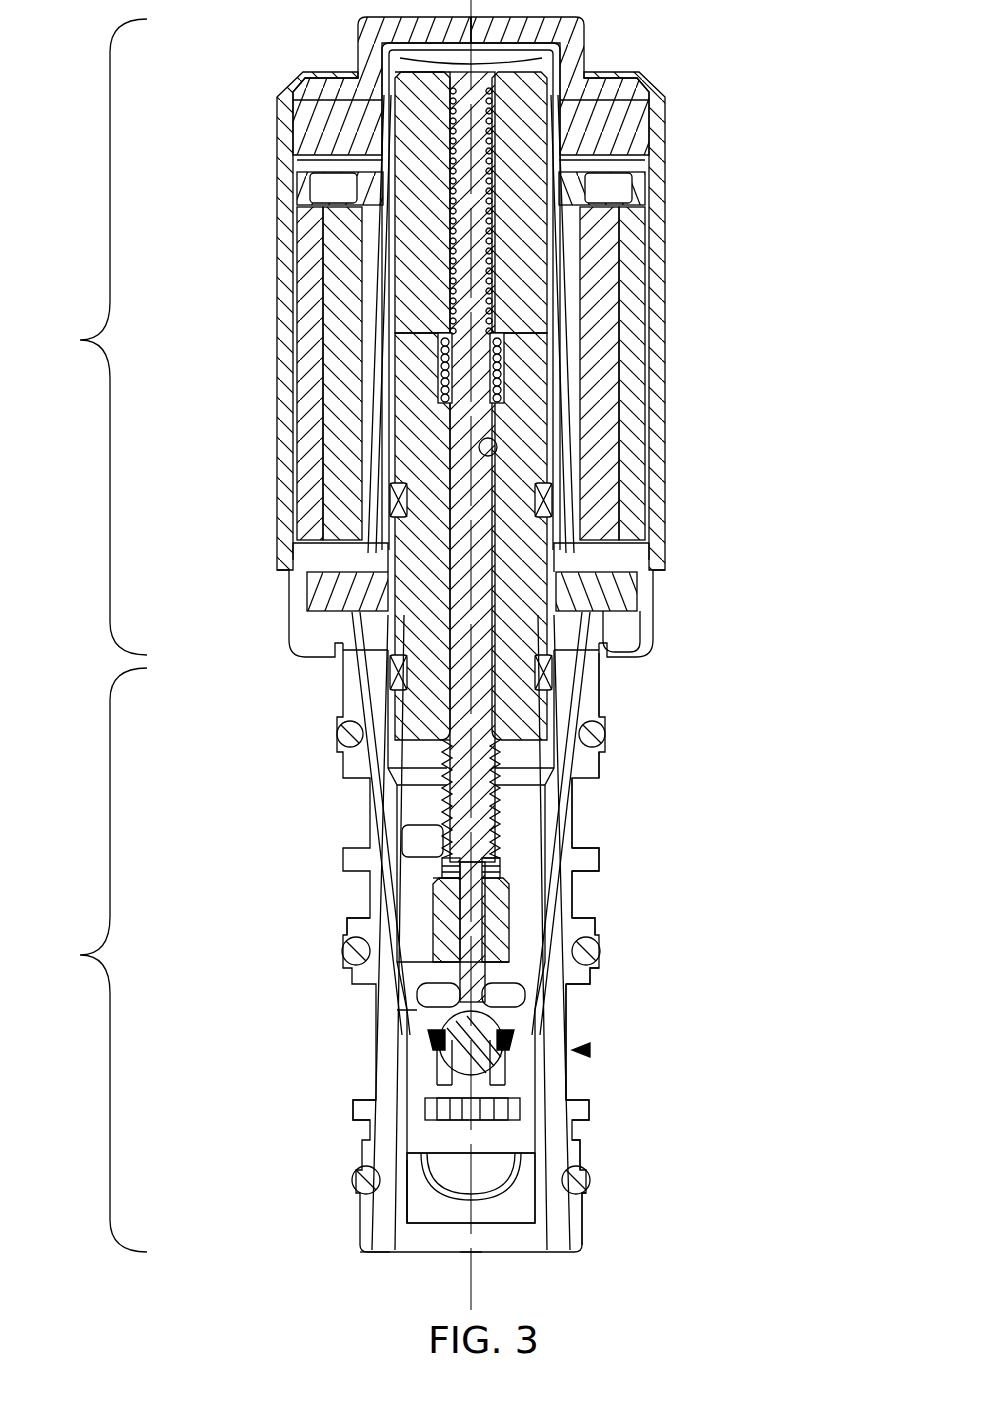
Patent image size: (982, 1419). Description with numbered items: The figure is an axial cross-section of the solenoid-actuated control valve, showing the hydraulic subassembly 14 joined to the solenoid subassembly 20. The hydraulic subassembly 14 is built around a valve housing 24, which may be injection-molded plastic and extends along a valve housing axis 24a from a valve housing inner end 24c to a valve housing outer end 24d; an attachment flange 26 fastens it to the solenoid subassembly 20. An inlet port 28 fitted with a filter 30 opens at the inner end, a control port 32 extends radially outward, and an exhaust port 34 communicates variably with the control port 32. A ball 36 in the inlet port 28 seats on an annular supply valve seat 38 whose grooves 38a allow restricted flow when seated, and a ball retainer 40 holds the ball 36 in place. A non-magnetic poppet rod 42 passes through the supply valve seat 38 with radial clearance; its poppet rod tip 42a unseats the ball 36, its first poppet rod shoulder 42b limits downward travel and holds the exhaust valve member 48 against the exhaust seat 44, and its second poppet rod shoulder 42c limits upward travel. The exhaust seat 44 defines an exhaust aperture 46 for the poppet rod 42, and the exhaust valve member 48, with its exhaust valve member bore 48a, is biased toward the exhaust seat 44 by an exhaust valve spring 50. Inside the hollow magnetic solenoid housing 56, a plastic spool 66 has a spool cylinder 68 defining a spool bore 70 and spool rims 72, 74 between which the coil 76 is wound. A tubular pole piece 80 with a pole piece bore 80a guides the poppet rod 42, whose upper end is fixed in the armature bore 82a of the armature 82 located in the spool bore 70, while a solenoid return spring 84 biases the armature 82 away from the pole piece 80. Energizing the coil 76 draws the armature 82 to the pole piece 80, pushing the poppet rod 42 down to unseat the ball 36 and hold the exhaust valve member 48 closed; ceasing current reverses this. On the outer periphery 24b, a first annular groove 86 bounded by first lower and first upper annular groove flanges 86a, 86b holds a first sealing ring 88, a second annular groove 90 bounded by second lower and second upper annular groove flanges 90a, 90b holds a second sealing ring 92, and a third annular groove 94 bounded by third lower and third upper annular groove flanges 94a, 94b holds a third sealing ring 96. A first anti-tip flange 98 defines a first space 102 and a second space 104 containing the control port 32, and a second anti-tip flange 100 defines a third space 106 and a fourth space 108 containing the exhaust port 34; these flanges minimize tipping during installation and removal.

The hydraulic subassembly 14 is at (80, 955).
The solenoid subassembly 20 is at (80, 340).
The valve housing 24 is at (590, 1050).
The valve housing axis 24a is at (475, 1290).
The outer periphery 24b is at (471, 931).
The valve housing inner end 24c is at (378, 1238).
The valve housing outer end 24d is at (640, 592).
The attachment flange 26 is at (625, 626).
The inlet port 28 is at (423, 1232).
The filter 30 is at (508, 1245).
The control port 32 is at (425, 996).
The exhaust port 34 is at (404, 844).
The ball 36 is at (450, 1052).
The supply valve seat 38 is at (503, 1040).
The grooves 38a is at (436, 1040).
The ball retainer 40 is at (445, 1108).
The poppet rod 42 is at (492, 904).
The poppet rod tip 42a is at (500, 1000).
The first poppet rod shoulder 42b is at (440, 874).
The second poppet rod shoulder 42c is at (448, 740).
The exhaust seat 44 is at (440, 942).
The exhaust aperture 46 is at (600, 952).
The exhaust valve member 48 is at (446, 896).
The exhaust valve member bore 48a is at (500, 884).
The exhaust valve spring 50 is at (442, 806).
The solenoid housing 56 is at (662, 300).
The spool 66 is at (380, 322).
The spool cylinder 68 is at (471, 324).
The spool bore 70 is at (556, 226).
The spool rim 72 is at (300, 560).
The spool rim 74 is at (318, 186).
The coil 76 is at (606, 386).
The pole piece 80 is at (548, 466).
The pole piece bore 80a is at (496, 444).
The armature 82 is at (548, 146).
The armature bore 82a is at (440, 130).
The solenoid return spring 84 is at (505, 356).
The first annular groove 86 is at (592, 1194).
The first lower annular groove flange 86a is at (584, 1236).
The first upper annular groove flange 86b is at (582, 1164).
The first sealing ring 88 is at (352, 1184).
The second annular groove 90 is at (596, 936).
The second lower annular groove flange 90a is at (354, 981).
The second upper annular groove flange 90b is at (356, 916).
The second sealing ring 92 is at (344, 956).
The third annular groove 94 is at (603, 726).
The third lower annular groove flange 94a is at (600, 768).
The third upper annular groove flange 94b is at (600, 698).
The third sealing ring 96 is at (338, 742).
The first anti-tip flange 98 is at (590, 1116).
The second anti-tip flange 100 is at (600, 860).
The first space 102 is at (362, 1134).
The second space 104 is at (575, 1090).
The third space 106 is at (574, 912).
The fourth space 108 is at (586, 822).